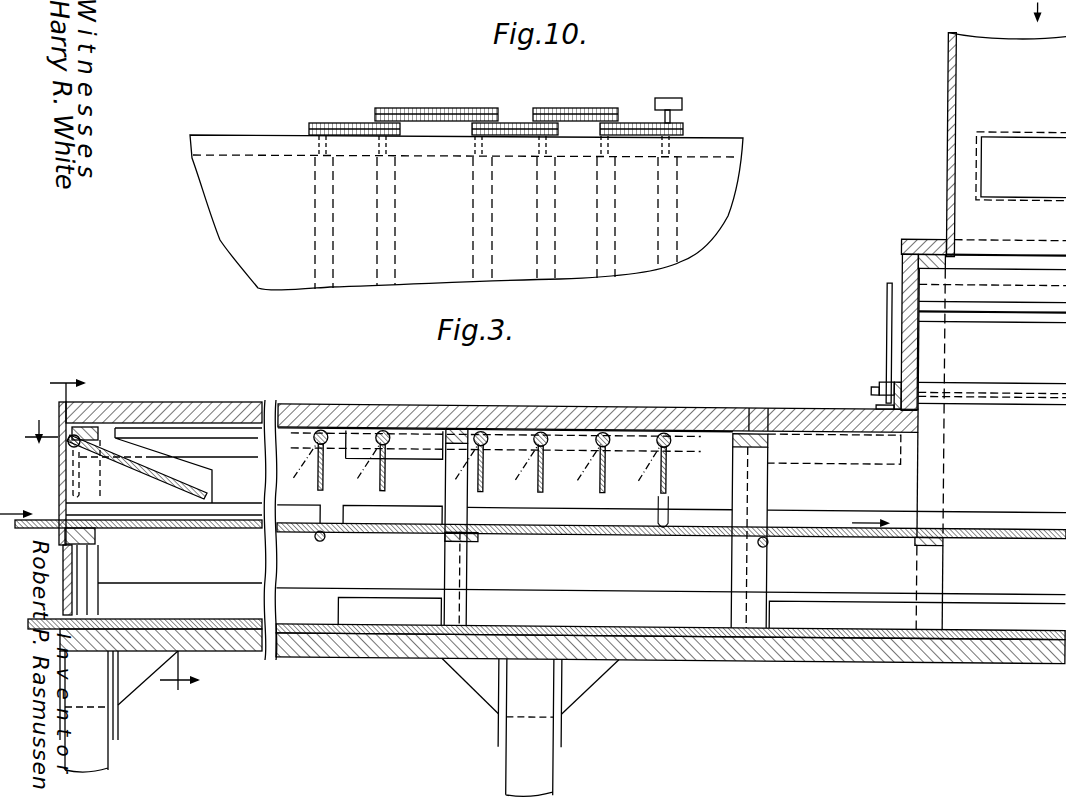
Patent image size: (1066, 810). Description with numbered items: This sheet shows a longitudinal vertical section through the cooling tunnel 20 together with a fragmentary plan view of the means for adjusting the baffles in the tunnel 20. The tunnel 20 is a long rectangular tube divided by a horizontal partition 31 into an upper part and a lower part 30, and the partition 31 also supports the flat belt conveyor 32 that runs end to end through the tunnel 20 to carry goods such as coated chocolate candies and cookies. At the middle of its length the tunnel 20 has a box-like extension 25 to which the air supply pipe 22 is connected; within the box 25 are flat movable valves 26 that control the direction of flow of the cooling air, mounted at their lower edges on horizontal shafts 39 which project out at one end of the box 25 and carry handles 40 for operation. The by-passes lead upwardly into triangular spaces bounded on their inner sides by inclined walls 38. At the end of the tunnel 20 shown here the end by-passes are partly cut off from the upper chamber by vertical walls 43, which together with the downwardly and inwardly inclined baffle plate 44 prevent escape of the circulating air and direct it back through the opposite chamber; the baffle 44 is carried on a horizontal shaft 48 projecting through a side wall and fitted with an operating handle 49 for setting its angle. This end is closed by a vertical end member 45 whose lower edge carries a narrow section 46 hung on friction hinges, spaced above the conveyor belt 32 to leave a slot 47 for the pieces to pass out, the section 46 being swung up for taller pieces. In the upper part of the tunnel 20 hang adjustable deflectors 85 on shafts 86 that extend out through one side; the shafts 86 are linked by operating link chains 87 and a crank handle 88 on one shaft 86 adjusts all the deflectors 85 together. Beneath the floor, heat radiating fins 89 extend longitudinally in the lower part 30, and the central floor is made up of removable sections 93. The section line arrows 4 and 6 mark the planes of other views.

In FIG. 3, the section line 4 is at (34, 433).
In FIG. 3, the section line 6 is at (125, 536).
In FIG. 10, the tunnel 20 is at (738, 214).
In FIG. 3, the tunnel 20 is at (627, 400).
In FIG. 3, the air supply pipe 22 is at (944, 64).
In FIG. 3, the box-like extension 25 is at (900, 250).
In FIG. 3, the movable valves 26 is at (991, 403).
In FIG. 3, the lower part 30 is at (691, 598).
In FIG. 3, the horizontal partition 31 is at (840, 533).
In FIG. 3, the flat belt conveyor 32 is at (814, 523).
In FIG. 3, the inclined walls 38 is at (990, 506).
In FIG. 3, the horizontal shafts 39 is at (872, 386).
In FIG. 3, the handles 40 is at (885, 314).
In FIG. 3, the vertical walls 43 is at (172, 465).
In FIG. 3, the inclined baffle plate 44 is at (180, 494).
In FIG. 3, the vertical end member 45 is at (60, 458).
In FIG. 3, the narrow section 46 is at (62, 518).
In FIG. 3, the slot 47 is at (131, 496).
In FIG. 3, the horizontal shaft 48 is at (62, 428).
In FIG. 3, the operating handle 49 is at (80, 488).
In FIG. 10, the adjustable deflectors 85 is at (475, 226).
In FIG. 3, the adjustable deflectors 85 is at (380, 490).
In FIG. 10, the shafts 86 is at (318, 150).
In FIG. 3, the shafts 86 is at (386, 431).
In FIG. 10, the operating link chains 87 is at (412, 108).
In FIG. 3, the operating link chains 87 is at (350, 440).
In FIG. 10, the crank handle 88 is at (668, 98).
In FIG. 3, the crank handle 88 is at (669, 508).
In FIG. 3, the heat radiating fins 89 is at (593, 570).
In FIG. 3, the sections 93 is at (522, 534).